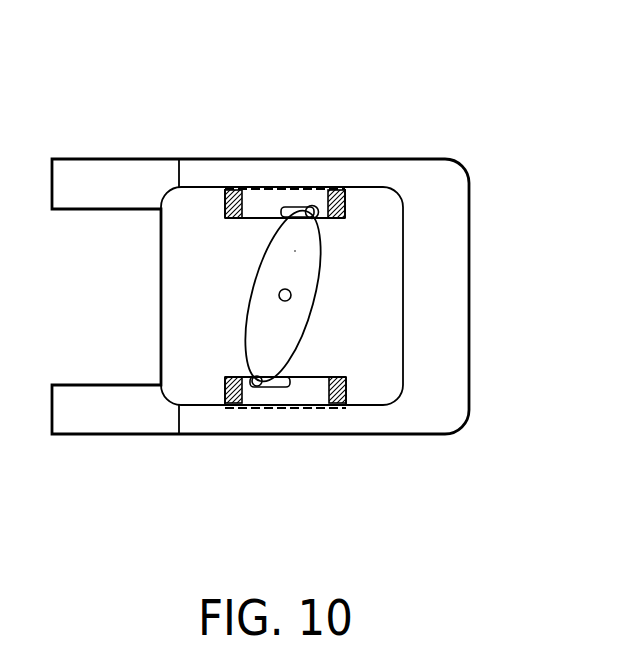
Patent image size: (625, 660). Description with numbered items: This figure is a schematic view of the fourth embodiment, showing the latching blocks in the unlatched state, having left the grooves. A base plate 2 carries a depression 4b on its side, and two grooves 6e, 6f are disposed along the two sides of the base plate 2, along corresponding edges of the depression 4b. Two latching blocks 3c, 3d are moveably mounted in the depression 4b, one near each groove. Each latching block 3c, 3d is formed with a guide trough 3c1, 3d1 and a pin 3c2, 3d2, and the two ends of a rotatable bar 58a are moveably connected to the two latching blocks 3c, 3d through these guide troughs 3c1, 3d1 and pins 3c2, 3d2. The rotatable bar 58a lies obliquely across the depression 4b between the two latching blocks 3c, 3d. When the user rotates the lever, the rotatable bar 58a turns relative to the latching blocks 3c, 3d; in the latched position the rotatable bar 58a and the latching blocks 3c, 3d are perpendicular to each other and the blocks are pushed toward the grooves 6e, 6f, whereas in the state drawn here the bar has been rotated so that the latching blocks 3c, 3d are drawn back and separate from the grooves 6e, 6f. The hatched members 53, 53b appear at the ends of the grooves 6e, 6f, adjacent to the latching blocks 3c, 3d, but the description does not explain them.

The base plate 2 is at (442, 283).
The depression 4b is at (163, 308).
The rotatable bar 58a is at (263, 260).
The latching block 3c is at (398, 147).
The guide trough 3c1 is at (294, 220).
The pin 3c2 is at (326, 233).
The latching block 3d is at (391, 424).
The guide trough 3d1 is at (283, 378).
The pin 3d2 is at (252, 374).
The groove 6e is at (300, 186).
The groove 6f is at (290, 410).
The lower guide blocks 53 is at (233, 408).
The upper guide blocks 53b is at (240, 186).